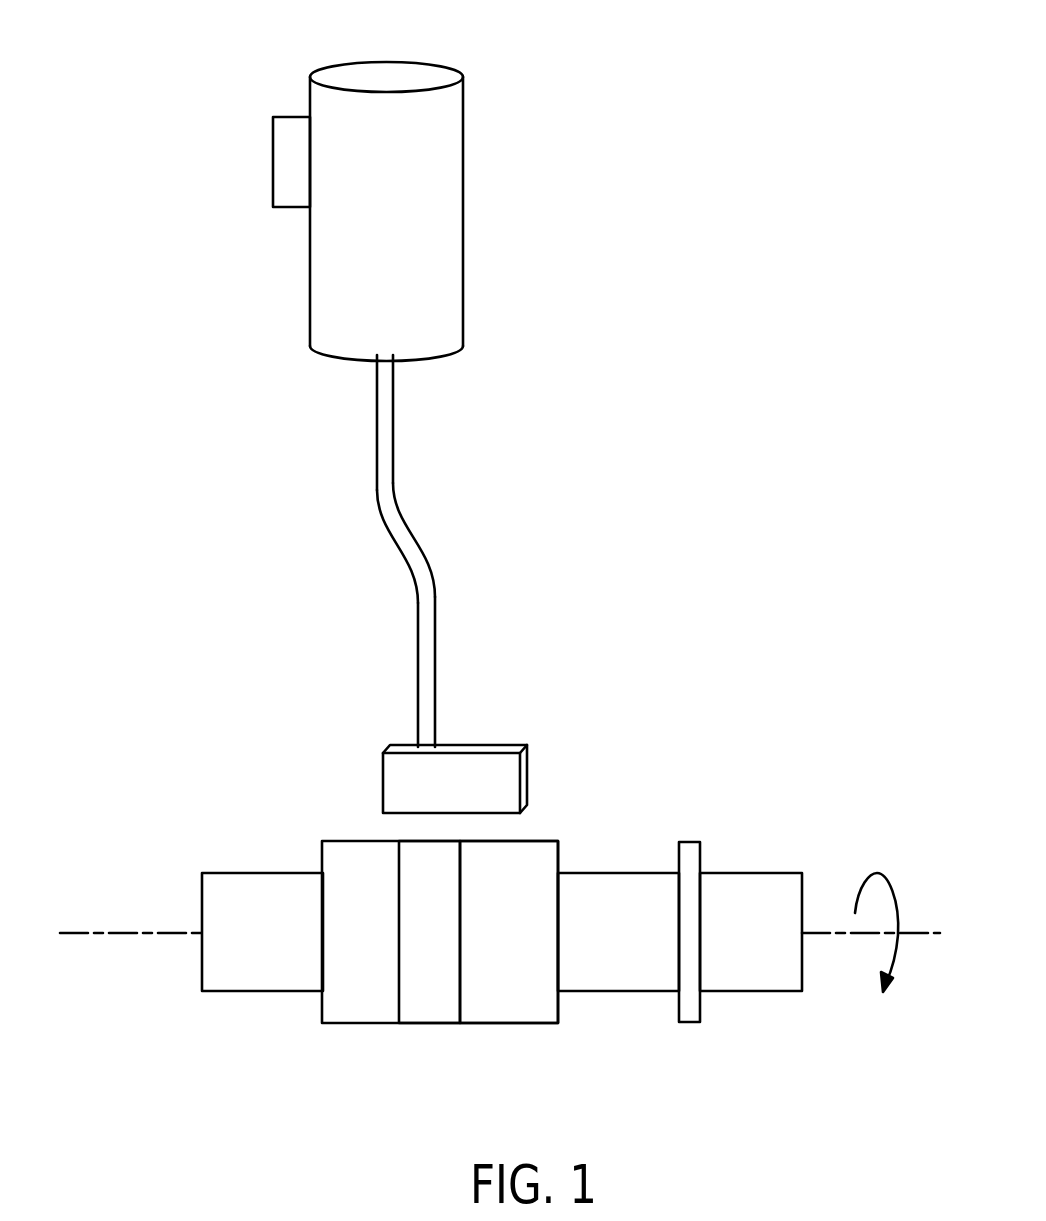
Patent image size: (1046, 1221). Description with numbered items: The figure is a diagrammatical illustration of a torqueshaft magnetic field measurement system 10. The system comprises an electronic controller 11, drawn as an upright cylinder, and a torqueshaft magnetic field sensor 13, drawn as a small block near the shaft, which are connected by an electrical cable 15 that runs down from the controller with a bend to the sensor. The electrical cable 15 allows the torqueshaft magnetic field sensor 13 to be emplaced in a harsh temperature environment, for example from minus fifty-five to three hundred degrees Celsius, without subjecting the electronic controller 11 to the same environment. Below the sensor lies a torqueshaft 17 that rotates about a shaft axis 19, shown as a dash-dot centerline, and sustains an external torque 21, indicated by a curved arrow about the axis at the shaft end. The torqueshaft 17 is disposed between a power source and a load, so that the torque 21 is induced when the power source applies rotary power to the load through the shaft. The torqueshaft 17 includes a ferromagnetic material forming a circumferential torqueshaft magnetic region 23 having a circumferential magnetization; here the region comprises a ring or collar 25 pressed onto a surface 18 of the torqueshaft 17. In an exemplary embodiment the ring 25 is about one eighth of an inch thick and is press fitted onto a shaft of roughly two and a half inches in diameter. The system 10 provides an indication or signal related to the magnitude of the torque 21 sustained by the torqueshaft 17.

The torqueshaft magnetic field measurement system 10 is at (757, 397).
The electronic controller 11 is at (463, 172).
The torqueshaft magnetic field sensor 13 is at (525, 765).
The electrical cable 15 is at (393, 430).
The torqueshaft 17 is at (797, 872).
The surface 18 is at (227, 872).
The shaft axis 19 is at (133, 931).
The external torque 21 is at (877, 872).
The torqueshaft magnetic region 23 is at (430, 1024).
The ring or collar 25 is at (520, 1024).